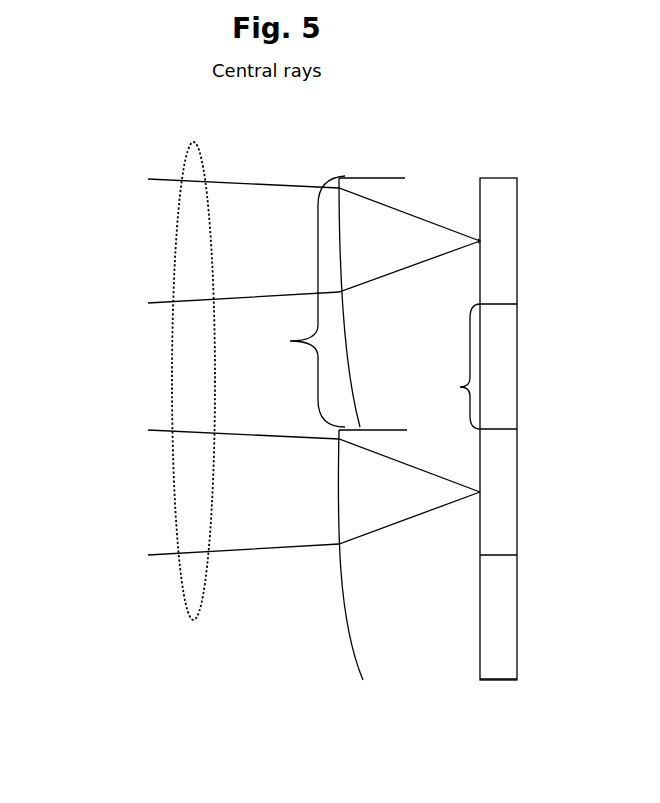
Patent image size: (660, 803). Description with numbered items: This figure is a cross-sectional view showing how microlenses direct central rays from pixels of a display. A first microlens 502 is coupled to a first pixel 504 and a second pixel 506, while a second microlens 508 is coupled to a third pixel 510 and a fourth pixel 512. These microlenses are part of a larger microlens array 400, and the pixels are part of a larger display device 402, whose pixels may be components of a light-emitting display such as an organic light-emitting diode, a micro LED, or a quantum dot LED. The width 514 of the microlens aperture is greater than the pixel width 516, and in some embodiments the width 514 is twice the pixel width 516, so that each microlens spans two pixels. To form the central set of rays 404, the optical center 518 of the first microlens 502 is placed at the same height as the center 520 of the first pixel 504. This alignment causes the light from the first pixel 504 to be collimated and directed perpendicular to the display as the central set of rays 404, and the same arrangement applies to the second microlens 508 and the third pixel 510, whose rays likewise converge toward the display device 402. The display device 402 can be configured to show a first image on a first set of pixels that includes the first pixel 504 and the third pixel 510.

The microlens array 400 is at (372, 681).
The display device 402 is at (558, 162).
The central set of rays 404 is at (182, 166).
The first microlens 502 is at (392, 178).
The first pixel 504 is at (517, 284).
The second pixel 506 is at (517, 395).
The second microlens 508 is at (342, 603).
The third pixel 510 is at (517, 546).
The fourth pixel 512 is at (517, 647).
The width of the microlens aperture 514 is at (291, 301).
The pixel width 516 is at (437, 366).
The optical center 518 is at (338, 238).
The center of the first pixel 520 is at (476, 240).